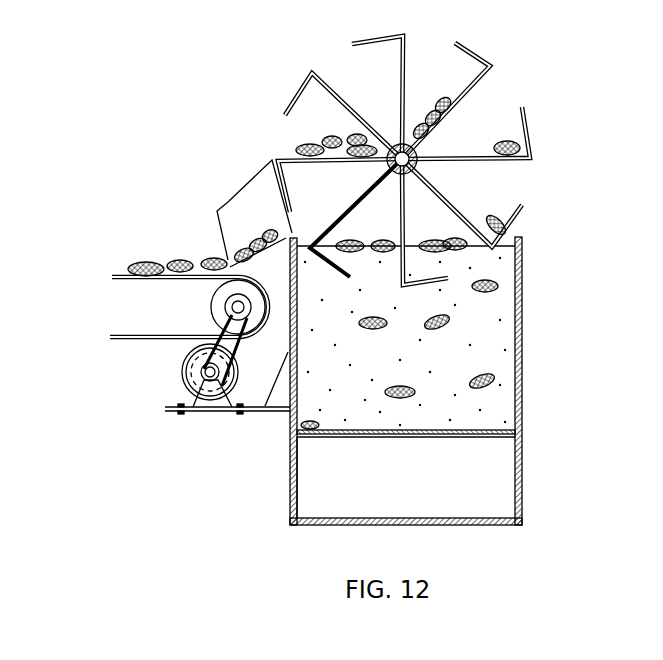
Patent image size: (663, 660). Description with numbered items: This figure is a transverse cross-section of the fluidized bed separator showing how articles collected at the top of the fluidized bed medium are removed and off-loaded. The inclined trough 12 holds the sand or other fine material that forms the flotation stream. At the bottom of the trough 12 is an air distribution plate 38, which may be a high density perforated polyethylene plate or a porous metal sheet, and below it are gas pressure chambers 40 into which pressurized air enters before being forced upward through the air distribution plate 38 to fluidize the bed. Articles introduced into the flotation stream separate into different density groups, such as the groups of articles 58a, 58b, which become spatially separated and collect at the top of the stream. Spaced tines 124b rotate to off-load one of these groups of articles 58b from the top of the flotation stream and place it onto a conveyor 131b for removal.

The trough 12 is at (533, 297).
The air distribution plate 38 is at (367, 437).
The gas pressure chambers 40 is at (419, 494).
The different density group of articles 58a is at (449, 324).
The different density group of articles 58b is at (177, 262).
The spaced tines 124b is at (493, 63).
The conveyor 131b is at (144, 283).